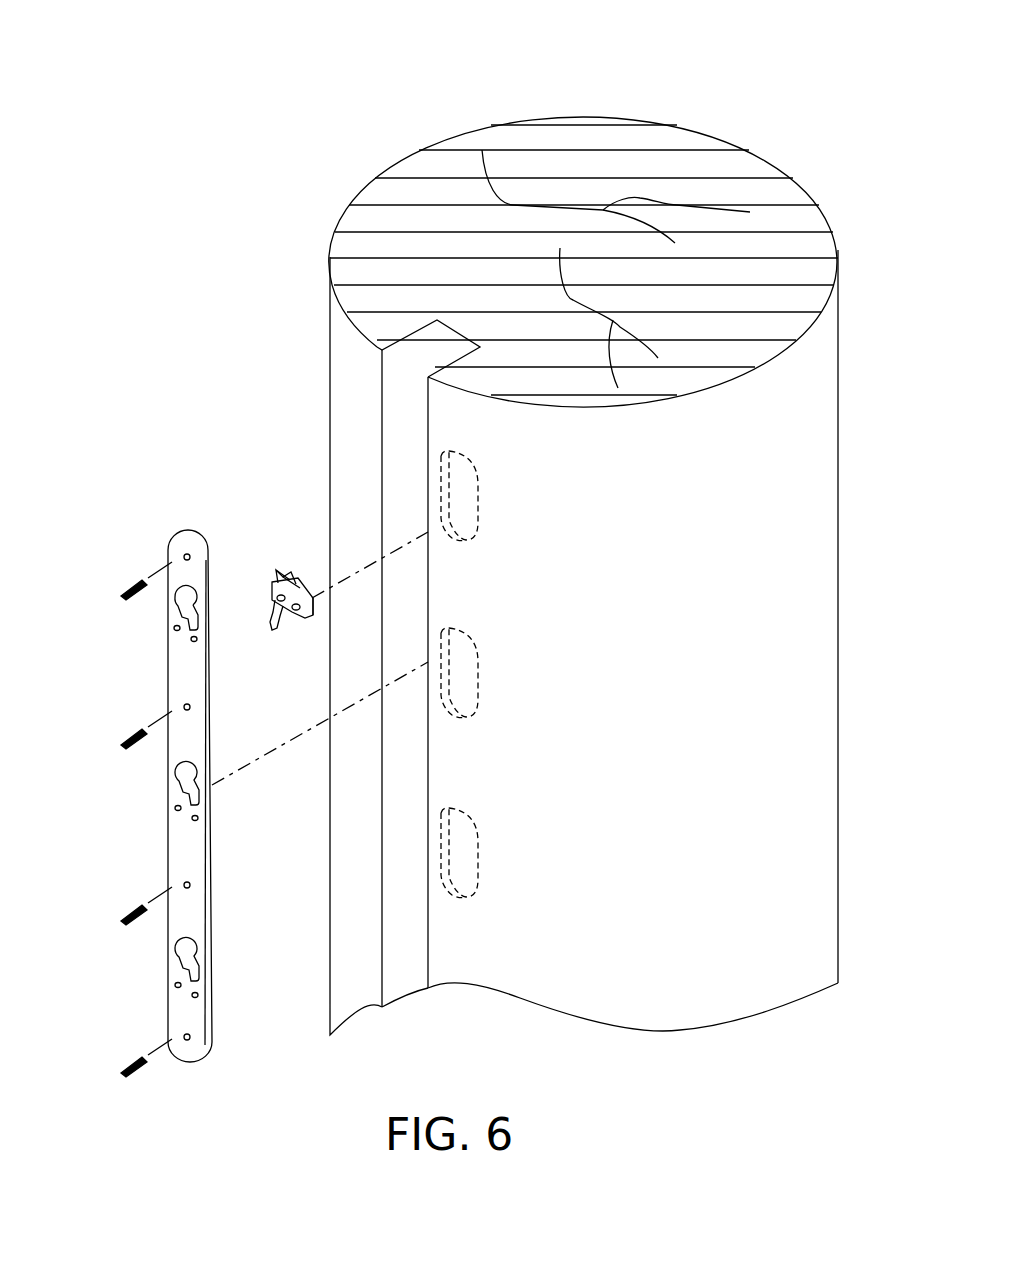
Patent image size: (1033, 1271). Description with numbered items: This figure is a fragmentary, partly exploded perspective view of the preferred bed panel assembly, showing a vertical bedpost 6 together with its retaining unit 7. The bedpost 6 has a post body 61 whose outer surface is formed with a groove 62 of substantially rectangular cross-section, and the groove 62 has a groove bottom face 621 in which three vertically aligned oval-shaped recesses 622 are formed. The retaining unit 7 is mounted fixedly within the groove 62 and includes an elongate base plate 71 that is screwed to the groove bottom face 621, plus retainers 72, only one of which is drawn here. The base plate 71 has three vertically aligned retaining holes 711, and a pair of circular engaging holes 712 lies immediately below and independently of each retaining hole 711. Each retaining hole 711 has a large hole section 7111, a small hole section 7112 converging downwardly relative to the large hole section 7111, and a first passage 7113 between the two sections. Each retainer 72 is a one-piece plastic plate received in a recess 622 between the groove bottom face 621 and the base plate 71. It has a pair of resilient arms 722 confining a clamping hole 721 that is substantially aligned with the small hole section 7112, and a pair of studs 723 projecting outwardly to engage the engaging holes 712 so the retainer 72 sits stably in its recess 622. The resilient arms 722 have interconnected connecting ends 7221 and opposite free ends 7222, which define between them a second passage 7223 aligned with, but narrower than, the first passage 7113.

The vertical bedpost 6 is at (742, 148).
The post body 61 is at (514, 137).
The groove 62 is at (412, 332).
The groove bottom face 621 is at (462, 338).
The oval-shaped recesses 622 is at (476, 468).
The retaining unit 7 is at (166, 546).
The elongate base plate 71 is at (170, 533).
The retaining holes 711 is at (140, 734).
The large hole section 7111 is at (183, 600).
The small hole section 7112 is at (176, 627).
The first passage 7113 is at (207, 597).
The circular engaging holes 712 is at (193, 640).
The retainers 72 is at (317, 533).
The clamping hole 721 is at (268, 590).
The resilient arms 722 is at (280, 580).
The connecting ends 7221 is at (300, 620).
The free ends 7222 is at (292, 572).
The second passage 7223 is at (288, 576).
The studs 723 is at (312, 607).